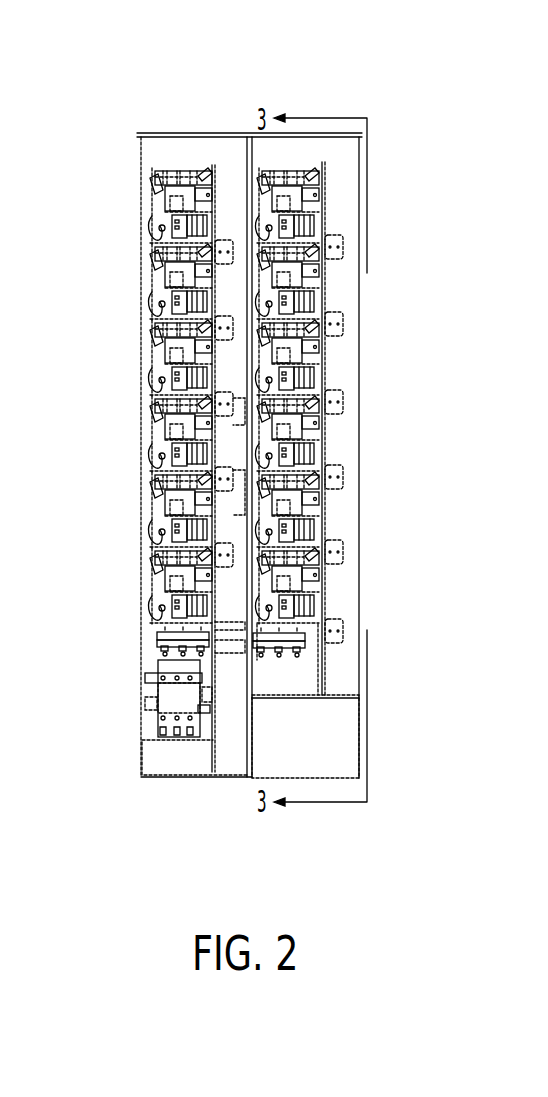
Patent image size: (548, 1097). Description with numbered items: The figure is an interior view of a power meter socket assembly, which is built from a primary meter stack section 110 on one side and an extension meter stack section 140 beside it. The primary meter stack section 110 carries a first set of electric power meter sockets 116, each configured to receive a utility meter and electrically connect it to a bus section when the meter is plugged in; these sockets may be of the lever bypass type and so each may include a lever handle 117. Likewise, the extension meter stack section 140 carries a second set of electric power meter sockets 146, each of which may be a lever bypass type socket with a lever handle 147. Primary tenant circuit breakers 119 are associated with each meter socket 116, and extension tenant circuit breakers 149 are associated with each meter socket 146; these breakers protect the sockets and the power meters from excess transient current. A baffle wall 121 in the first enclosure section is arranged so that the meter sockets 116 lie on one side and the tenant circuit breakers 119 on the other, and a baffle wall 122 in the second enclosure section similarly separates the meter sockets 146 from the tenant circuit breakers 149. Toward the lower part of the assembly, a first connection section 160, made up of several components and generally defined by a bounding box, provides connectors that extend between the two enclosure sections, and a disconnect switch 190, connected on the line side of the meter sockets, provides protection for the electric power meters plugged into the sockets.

The primary meter stack section 110 is at (142, 100).
The extension meter stack section 140 is at (262, 100).
The primary tenant circuit breakers 119 is at (220, 330).
The first set of electric power meter sockets 116 is at (173, 447).
The lever handle 117 is at (212, 467).
The second set of electric power meter sockets 146 is at (298, 366).
The baffle wall 122 is at (322, 422).
The lever handle 147 is at (315, 530).
The extension tenant circuit breakers 149 is at (338, 630).
The first connection section 160 is at (147, 660).
The disconnect switch 190 is at (177, 720).
The baffle wall 121 is at (213, 748).